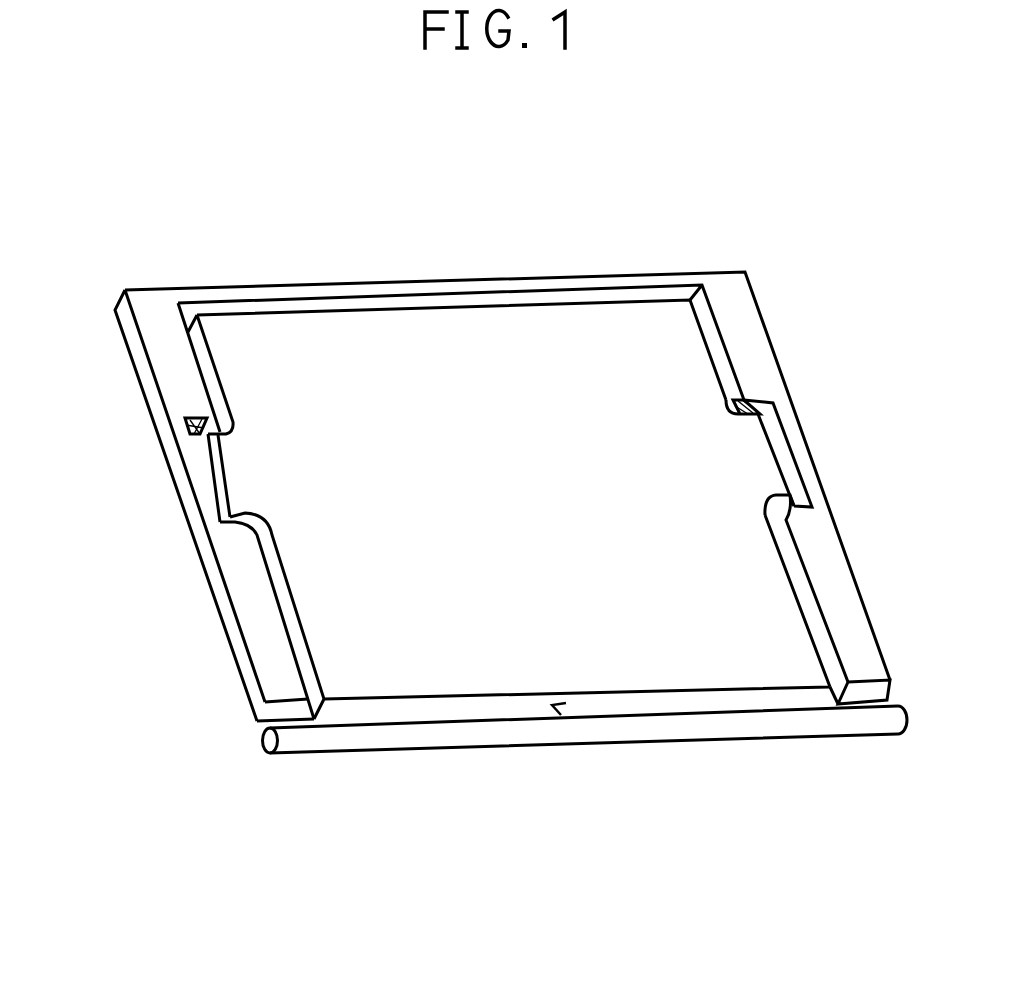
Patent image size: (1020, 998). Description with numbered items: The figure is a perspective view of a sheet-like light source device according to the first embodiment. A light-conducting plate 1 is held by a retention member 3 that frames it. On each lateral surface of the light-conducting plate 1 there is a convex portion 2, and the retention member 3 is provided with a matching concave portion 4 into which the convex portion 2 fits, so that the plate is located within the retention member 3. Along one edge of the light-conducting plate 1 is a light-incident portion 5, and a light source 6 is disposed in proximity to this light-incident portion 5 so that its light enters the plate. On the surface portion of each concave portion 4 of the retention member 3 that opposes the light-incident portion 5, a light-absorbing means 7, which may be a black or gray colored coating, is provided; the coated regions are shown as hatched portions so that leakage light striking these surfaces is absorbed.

The light-conducting plate 1 is at (522, 347).
The convex portion 2 is at (237, 494).
The retention member 3 is at (745, 330).
The concave portion 4 is at (200, 468).
The light-incident portion 5 is at (552, 705).
The light source 6 is at (700, 722).
The light-absorbing means 7 is at (187, 427).